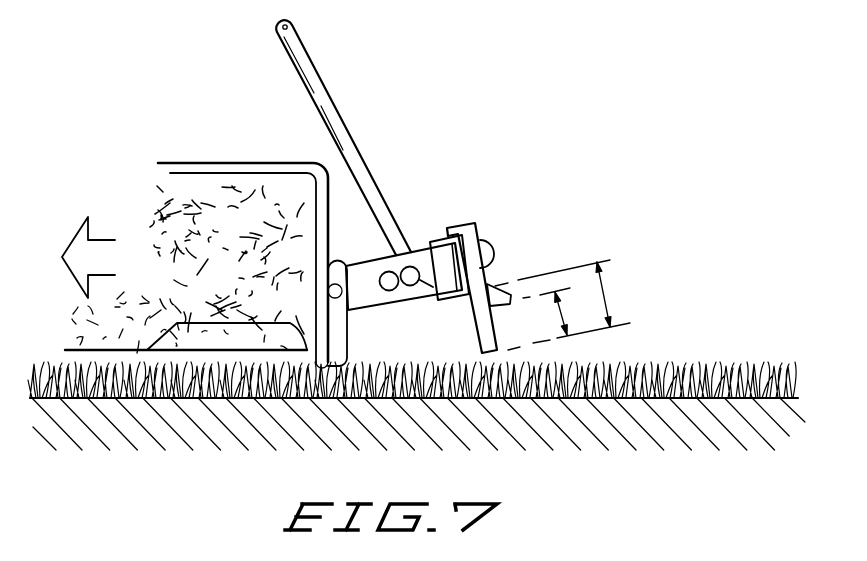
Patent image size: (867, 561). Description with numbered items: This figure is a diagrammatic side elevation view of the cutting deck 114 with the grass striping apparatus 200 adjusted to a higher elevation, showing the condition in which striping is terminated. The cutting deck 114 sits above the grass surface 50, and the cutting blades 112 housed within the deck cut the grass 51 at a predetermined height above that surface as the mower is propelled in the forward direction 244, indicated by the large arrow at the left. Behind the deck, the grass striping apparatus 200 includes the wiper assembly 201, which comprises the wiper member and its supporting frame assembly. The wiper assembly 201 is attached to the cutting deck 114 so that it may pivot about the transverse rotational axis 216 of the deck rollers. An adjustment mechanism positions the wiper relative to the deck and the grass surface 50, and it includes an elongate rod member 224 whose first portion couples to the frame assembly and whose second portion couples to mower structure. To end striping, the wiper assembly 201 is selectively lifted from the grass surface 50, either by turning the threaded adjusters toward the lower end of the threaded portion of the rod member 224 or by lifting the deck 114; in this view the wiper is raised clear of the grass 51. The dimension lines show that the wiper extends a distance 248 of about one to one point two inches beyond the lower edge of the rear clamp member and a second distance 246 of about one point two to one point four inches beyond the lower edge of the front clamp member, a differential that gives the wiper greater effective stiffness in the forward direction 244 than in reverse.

The grass surface 50 is at (788, 400).
The grass 51 is at (673, 365).
The cutting blades 112 is at (82, 350).
The cutting deck 114 is at (248, 163).
The grass striping apparatus 200 is at (425, 210).
The wiper assembly 201 is at (498, 248).
The transverse rotational axis 216 is at (343, 272).
The rod member 224 is at (316, 67).
The forward direction 244 is at (103, 238).
The second distance 246 is at (604, 294).
The distance 248 is at (550, 317).